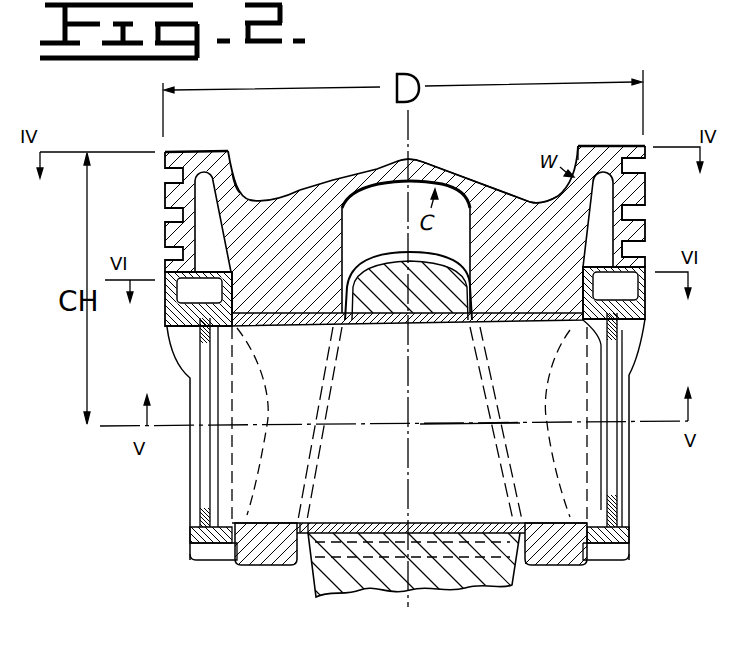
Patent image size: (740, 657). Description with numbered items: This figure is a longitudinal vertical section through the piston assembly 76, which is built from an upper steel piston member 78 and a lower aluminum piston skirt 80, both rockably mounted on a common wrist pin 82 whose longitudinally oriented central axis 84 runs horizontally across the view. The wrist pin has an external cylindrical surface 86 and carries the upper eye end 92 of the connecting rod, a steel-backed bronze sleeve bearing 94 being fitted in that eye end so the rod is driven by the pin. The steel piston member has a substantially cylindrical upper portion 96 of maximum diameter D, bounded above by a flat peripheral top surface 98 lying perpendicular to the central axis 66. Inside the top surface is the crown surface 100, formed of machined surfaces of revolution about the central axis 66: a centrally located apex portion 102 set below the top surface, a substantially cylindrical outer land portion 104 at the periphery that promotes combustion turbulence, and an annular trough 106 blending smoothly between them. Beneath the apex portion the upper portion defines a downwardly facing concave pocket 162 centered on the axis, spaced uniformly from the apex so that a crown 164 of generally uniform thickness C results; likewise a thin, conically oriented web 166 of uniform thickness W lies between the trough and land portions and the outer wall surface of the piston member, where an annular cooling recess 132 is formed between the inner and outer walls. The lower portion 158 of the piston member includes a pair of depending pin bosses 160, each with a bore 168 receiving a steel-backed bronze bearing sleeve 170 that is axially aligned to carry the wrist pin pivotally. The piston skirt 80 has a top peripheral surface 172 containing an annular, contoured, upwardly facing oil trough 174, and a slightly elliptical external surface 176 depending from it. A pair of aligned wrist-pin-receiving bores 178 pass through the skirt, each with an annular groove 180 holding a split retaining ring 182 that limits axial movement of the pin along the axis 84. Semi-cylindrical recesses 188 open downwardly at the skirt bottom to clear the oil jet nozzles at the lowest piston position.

The peripheral top surface 98 is at (405, 205).
The web 166 is at (263, 156).
The annular cooling recess 132 is at (174, 222).
The crown surface 100 is at (403, 174).
The crown 164 is at (382, 144).
The central axis 66 is at (438, 352).
The apex portion 102 is at (476, 162).
The outer land portion 104 is at (548, 138).
The steel piston member 78 is at (608, 119).
The annular trough 106 is at (532, 182).
The upper portion 96 is at (667, 207).
The top peripheral surface 172 is at (652, 220).
The external surface 176 is at (658, 295).
The wrist-pin-receiving bores 178 is at (639, 439).
The piston skirt 80 is at (642, 445).
The wrist pin 82 is at (647, 420).
The lower portion 158 is at (480, 423).
The central axis 84 is at (470, 405).
The external cylindrical surface 86 is at (338, 423).
The oil trough 174 is at (173, 310).
The bearing sleeve 170 is at (407, 335).
The bore 168 is at (449, 302).
The concave pocket 162 is at (406, 247).
The sleeve bearing 94 is at (409, 510).
The upper eye end 92 is at (414, 580).
The pin bosses 160 is at (395, 562).
The semi-cylindrical recesses 188 is at (295, 560).
The split retaining rings 182 is at (174, 422).
The annular groove 180 is at (176, 527).
The piston assembly 76 is at (168, 457).